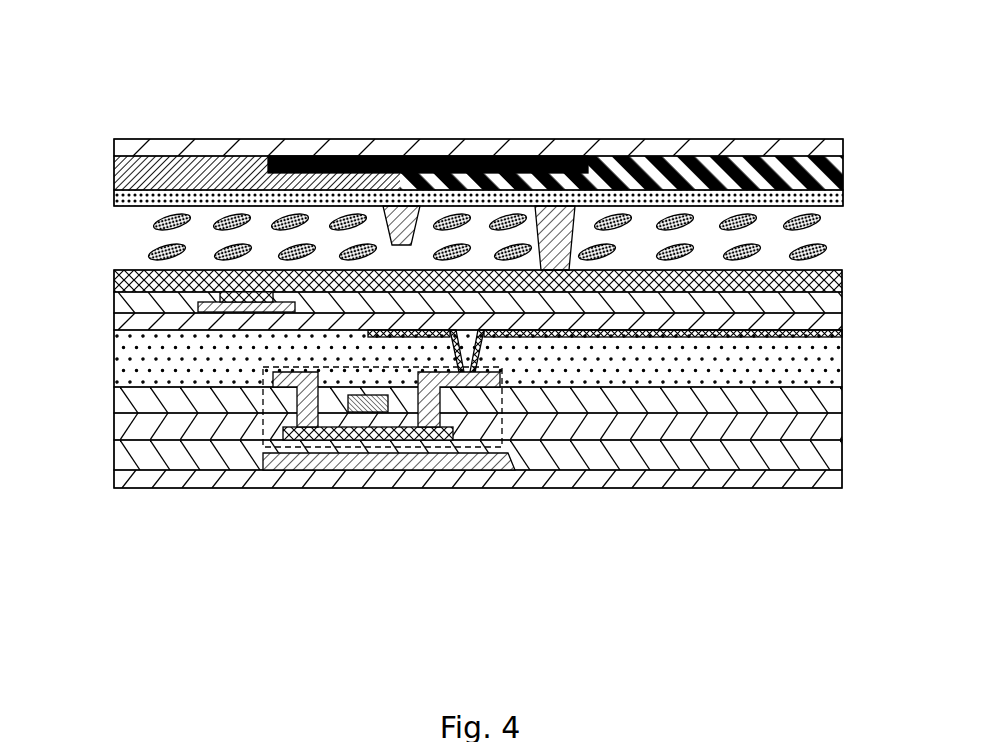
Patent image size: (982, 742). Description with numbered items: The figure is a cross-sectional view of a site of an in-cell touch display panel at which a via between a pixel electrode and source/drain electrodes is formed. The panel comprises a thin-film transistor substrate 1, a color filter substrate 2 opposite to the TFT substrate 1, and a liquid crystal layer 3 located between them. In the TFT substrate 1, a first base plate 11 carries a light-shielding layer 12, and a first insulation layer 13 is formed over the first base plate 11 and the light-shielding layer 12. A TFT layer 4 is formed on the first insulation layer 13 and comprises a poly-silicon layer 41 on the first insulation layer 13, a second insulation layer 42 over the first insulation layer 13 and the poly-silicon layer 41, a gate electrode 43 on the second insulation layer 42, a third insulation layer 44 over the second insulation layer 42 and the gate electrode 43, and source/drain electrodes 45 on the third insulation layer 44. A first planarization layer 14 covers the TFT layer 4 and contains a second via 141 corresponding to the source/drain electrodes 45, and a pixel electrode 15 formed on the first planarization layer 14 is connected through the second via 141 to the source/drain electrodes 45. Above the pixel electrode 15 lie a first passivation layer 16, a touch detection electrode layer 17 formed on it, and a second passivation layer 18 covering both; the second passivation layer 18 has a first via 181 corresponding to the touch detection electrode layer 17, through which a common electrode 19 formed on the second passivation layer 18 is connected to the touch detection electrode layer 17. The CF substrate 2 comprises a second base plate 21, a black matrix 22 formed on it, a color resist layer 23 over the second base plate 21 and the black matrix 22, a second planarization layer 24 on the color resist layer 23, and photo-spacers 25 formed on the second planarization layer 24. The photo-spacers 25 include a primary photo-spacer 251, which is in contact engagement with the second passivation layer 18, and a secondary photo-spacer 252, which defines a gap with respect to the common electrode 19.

The thin-film transistor substrate 1 is at (453, 435).
The color filter substrate 2 is at (453, 139).
The liquid crystal layer 3 is at (147, 255).
The TFT layer 4 is at (512, 447).
The first base plate 11 is at (135, 480).
The light-shielding layer 12 is at (343, 462).
The first insulation layer 13 is at (178, 468).
The first planarization layer 14 is at (677, 370).
The second via 141 is at (470, 374).
The pixel electrode 15 is at (727, 332).
The first passivation layer 16 is at (773, 318).
The touch detection electrode layer 17 is at (228, 308).
The second passivation layer 18 is at (812, 303).
The first via 181 is at (273, 303).
The common electrode 19 is at (313, 280).
The second base plate 21 is at (800, 148).
The black matrix 22 is at (276, 160).
The color resist layer 23 is at (727, 170).
The second planarization layer 24 is at (647, 200).
The photo-spacers 25 is at (553, 62).
The primary photo-spacer 251 is at (553, 225).
The secondary photo-spacer 252 is at (396, 235).
The poly-silicon layer 41 is at (418, 441).
The second insulation layer 42 is at (593, 427).
The gate electrode 43 is at (373, 402).
The third insulation layer 44 is at (630, 407).
The source/drain electrodes 45 is at (448, 380).